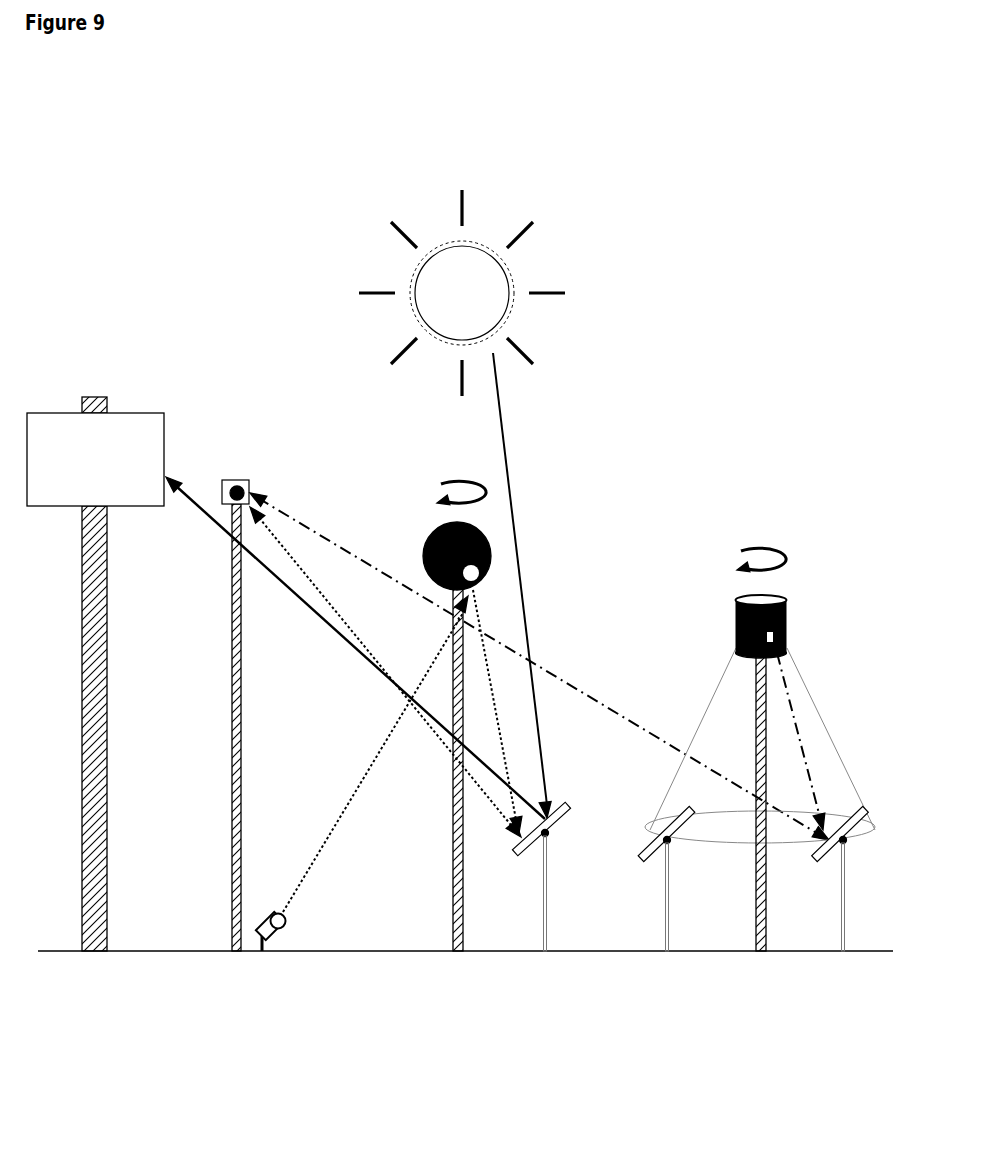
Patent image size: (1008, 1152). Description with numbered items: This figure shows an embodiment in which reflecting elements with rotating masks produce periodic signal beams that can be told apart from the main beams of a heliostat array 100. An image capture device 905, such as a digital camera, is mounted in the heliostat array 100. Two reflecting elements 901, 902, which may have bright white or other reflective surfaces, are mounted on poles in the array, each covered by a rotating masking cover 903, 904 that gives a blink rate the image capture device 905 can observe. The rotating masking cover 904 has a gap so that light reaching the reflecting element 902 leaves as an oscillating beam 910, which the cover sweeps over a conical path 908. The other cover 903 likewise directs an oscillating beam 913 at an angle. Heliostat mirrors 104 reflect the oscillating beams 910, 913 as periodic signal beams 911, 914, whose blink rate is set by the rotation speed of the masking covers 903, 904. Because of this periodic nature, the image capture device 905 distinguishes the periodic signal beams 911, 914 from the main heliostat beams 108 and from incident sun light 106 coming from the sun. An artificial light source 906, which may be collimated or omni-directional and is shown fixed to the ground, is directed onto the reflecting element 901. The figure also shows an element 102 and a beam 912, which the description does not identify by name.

The heliostat array 100 is at (200, 243).
The receiver/target 102 is at (164, 413).
The heliostat mirrors 104 is at (683, 940).
The incident sun light 106 is at (518, 543).
The main heliostat beams 108 is at (258, 565).
The reflecting element 901 is at (483, 577).
The reflecting element 902 is at (755, 598).
The rotating masking cover 903 is at (430, 532).
The rotating masking cover 904 is at (787, 620).
The image capture device 905 is at (249, 480).
The artificial light source 906 is at (288, 935).
The conical path 908 is at (812, 690).
The oscillating beam 910 is at (805, 750).
The periodic signal beam 911 is at (587, 693).
The light beam from source 912 is at (363, 773).
The oscillating beam 913 is at (508, 782).
The periodic signal beam 914 is at (342, 640).